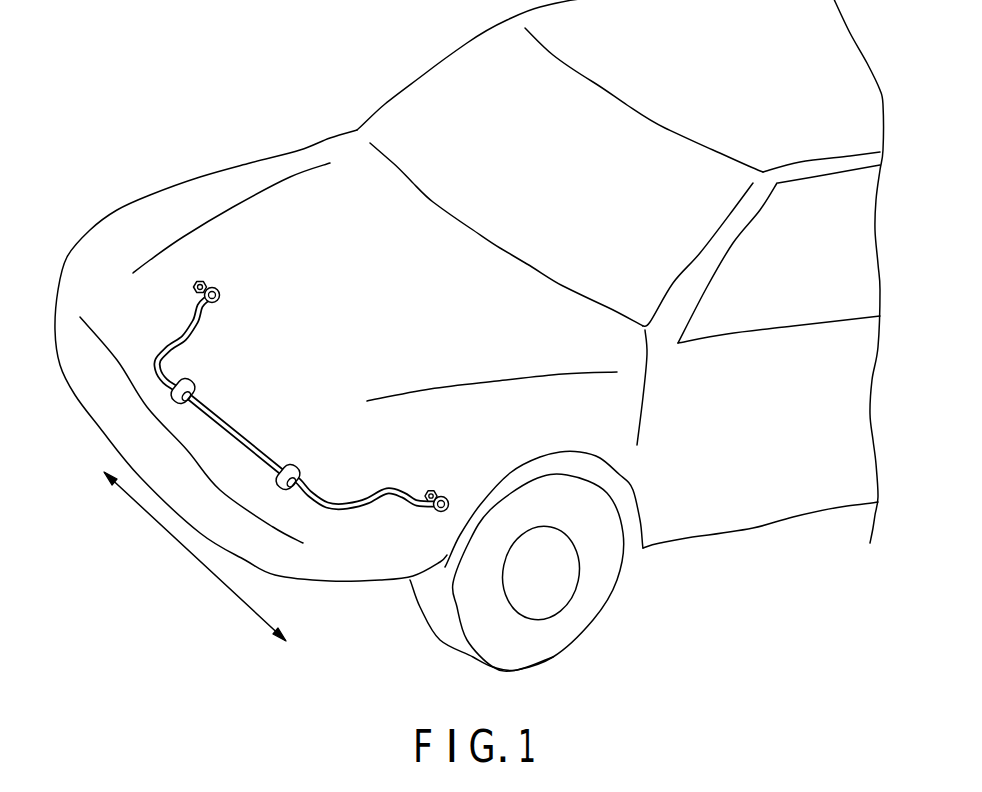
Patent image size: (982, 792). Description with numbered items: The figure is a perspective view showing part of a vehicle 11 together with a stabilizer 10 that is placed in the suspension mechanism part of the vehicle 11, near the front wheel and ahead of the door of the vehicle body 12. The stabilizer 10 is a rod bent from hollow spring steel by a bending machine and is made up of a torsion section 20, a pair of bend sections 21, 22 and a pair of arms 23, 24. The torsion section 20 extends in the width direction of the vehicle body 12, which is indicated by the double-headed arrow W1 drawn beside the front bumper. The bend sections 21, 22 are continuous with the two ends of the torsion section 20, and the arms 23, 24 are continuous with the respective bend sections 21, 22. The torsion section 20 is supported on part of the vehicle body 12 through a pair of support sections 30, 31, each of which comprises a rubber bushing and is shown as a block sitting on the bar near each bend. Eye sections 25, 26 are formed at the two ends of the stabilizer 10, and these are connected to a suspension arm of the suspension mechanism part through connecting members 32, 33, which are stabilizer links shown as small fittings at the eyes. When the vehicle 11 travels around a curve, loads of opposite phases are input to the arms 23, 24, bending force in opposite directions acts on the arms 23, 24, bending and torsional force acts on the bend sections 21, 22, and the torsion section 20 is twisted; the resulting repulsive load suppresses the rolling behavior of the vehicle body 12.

The stabilizer 10 is at (261, 399).
The vehicle 11 is at (217, 80).
The vehicle body 12 is at (665, 548).
The torsion section 20 is at (243, 428).
The bend section 21 is at (190, 344).
The bend section 22 is at (360, 501).
The arm 23 is at (190, 343).
The arm 24 is at (360, 487).
The eye section 25 is at (220, 293).
The eye section 26 is at (443, 498).
The support section 30 is at (192, 383).
The support section 31 is at (300, 470).
The connecting member 32 is at (201, 281).
The connecting member 33 is at (437, 512).
The arrow indicating width direction W1 is at (197, 560).